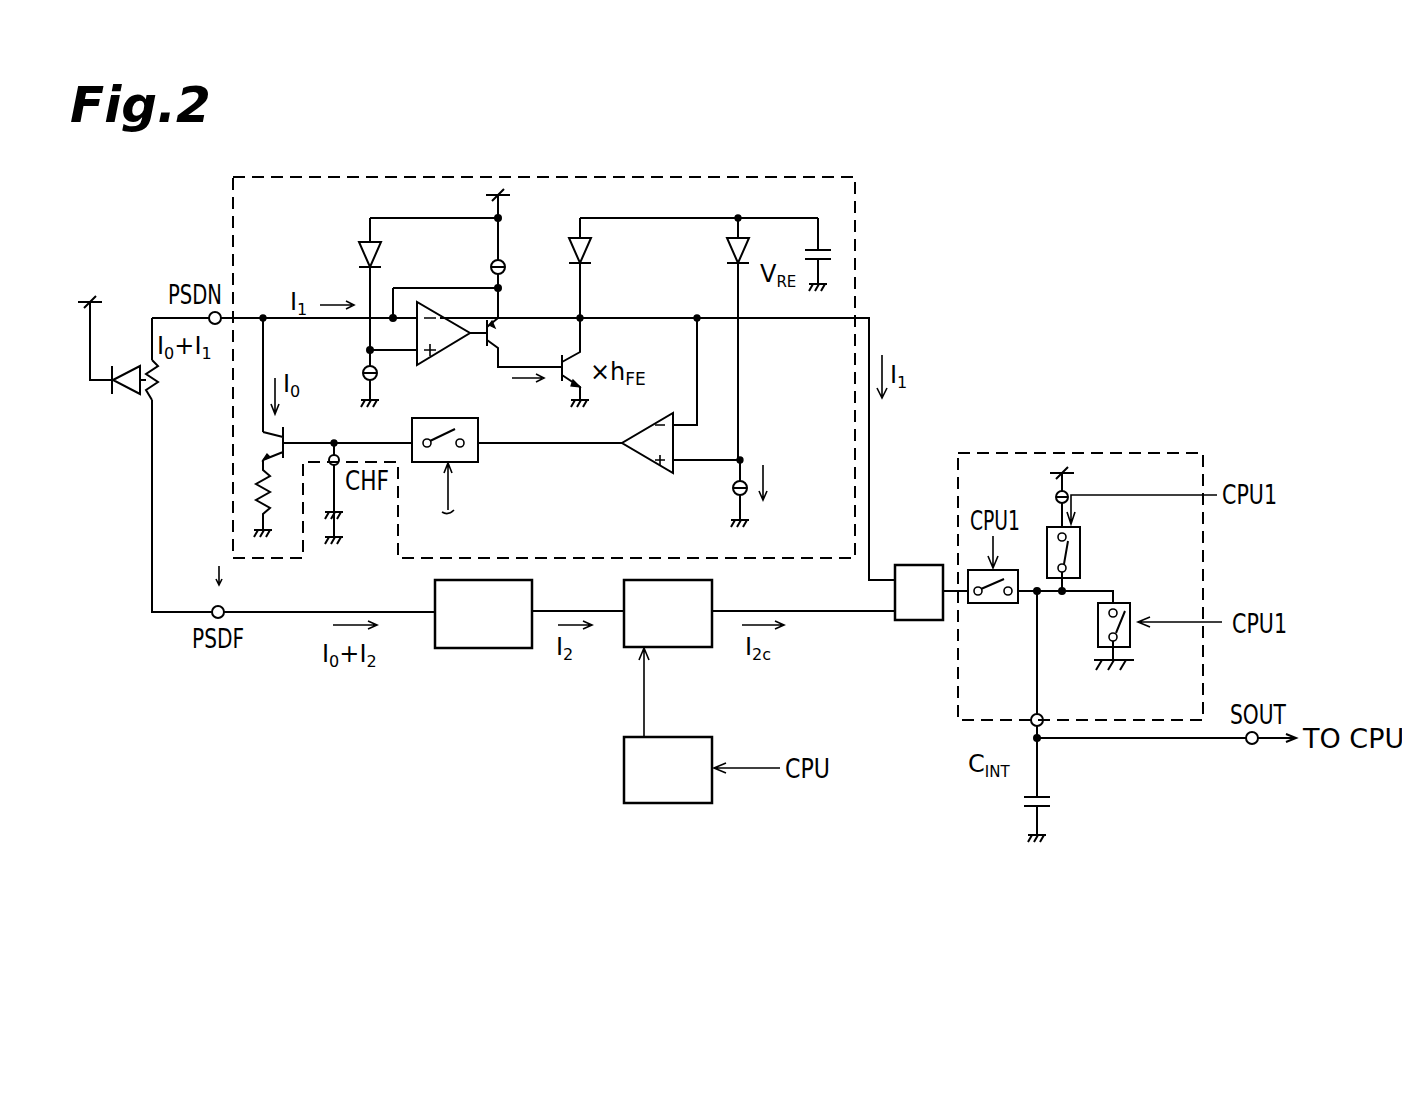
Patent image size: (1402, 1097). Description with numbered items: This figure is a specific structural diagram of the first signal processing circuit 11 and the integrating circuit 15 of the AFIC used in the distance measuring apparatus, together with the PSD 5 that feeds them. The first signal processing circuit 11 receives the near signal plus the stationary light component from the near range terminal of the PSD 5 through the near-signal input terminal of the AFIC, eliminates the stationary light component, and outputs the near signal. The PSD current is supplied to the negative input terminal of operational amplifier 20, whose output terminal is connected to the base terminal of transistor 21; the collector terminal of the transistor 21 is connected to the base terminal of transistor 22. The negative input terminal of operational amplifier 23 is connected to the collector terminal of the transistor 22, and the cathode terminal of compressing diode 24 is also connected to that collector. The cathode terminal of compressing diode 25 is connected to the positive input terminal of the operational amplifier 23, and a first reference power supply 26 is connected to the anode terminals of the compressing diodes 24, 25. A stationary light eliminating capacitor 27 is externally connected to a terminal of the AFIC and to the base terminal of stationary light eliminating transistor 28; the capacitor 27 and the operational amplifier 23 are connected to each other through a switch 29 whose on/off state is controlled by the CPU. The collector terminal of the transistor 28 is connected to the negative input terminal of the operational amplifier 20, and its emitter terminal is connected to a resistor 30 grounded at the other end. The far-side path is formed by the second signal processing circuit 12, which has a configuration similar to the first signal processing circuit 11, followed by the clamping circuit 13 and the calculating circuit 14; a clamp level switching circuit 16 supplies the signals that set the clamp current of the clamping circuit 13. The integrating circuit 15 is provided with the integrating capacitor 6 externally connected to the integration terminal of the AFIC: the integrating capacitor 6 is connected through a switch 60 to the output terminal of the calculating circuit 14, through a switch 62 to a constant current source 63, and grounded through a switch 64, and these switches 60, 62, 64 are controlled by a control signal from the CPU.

The PSD 5 is at (130, 376).
The integrating capacitor 6 is at (1050, 801).
The first signal processing circuit 11 is at (460, 176).
The second signal processing circuit 12 is at (478, 648).
The clamping circuit 13 is at (662, 647).
The calculating circuit 14 is at (924, 565).
The integrating circuit 15 is at (1134, 452).
The clamp level switching circuit 16 is at (662, 803).
The operational amplifier 20 is at (456, 358).
The transistor 21 is at (492, 350).
The transistor 22 is at (556, 390).
The operational amplifier 23 is at (652, 473).
The compressing diode 24 is at (568, 250).
The compressing diode 25 is at (728, 258).
The first reference power supply 26 is at (826, 248).
The stationary light eliminating capacitor 27 is at (350, 513).
The stationary light eliminating transistor 28 is at (337, 427).
The switch 29 is at (480, 460).
The resistor 30 is at (256, 488).
The switch 60 is at (998, 603).
The switch 62 is at (1050, 527).
The constant current source 63 is at (1069, 490).
The switch 64 is at (1132, 603).